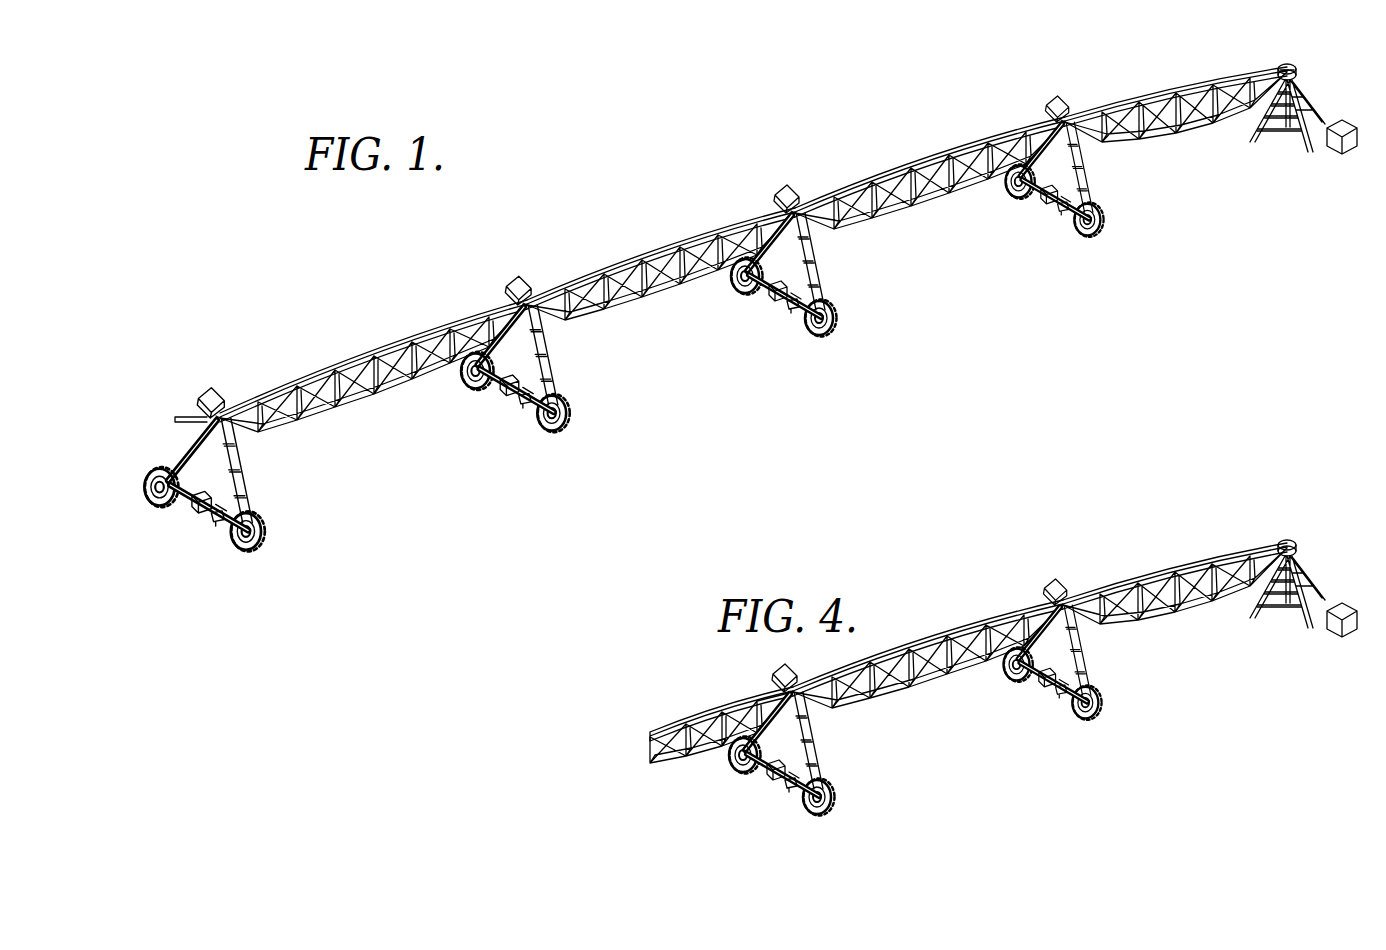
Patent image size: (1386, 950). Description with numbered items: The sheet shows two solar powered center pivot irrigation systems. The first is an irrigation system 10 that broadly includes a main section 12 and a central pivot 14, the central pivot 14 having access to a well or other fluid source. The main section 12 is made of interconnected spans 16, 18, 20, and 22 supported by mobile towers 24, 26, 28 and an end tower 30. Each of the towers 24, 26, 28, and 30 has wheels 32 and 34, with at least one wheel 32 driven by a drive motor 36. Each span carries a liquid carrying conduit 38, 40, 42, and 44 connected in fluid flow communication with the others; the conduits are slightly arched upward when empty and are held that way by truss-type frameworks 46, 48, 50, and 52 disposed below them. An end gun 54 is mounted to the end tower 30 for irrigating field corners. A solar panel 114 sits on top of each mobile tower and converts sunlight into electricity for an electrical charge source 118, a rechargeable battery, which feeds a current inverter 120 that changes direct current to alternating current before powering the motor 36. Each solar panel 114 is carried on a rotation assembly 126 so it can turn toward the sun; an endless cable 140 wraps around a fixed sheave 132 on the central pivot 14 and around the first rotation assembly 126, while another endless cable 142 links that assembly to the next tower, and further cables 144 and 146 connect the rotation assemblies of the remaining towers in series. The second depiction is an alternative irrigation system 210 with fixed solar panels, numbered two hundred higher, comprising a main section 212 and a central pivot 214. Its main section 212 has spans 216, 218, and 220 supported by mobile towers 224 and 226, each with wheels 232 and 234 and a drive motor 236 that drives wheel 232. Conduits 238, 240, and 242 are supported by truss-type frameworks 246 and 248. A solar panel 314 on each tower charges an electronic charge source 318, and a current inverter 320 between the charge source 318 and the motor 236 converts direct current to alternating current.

In FIG. 1, the irrigation system 10 is at (608, 180).
In FIG. 1, the main section 12 is at (357, 272).
In FIG. 1, the central pivot 14 is at (1304, 136).
In FIG. 1, the span 16 is at (1218, 70).
In FIG. 1, the span 18 is at (980, 130).
In FIG. 1, the span 20 is at (735, 195).
In FIG. 1, the span 22 is at (440, 300).
In FIG. 1, the mobile tower 24 is at (1097, 257).
In FIG. 1, the mobile tower 26 is at (812, 347).
In FIG. 1, the mobile tower 28 is at (546, 452).
In FIG. 1, the end tower 30 is at (177, 560).
In FIG. 1, the wheel 32 is at (152, 473).
In FIG. 1, the wheel 34 is at (260, 537).
In FIG. 1, the drive motor 36 is at (209, 514).
In FIG. 1, the liquid carrying conduit 38 is at (1188, 97).
In FIG. 1, the liquid carrying conduit 40 is at (928, 162).
In FIG. 1, the liquid carrying conduit 42 is at (673, 247).
In FIG. 1, the liquid carrying conduit 44 is at (362, 356).
In FIG. 1, the truss-type framework 46 is at (1218, 162).
In FIG. 1, the truss-type framework 48 is at (975, 255).
In FIG. 1, the truss-type framework 50 is at (700, 345).
In FIG. 1, the truss-type framework 52 is at (407, 432).
In FIG. 1, the end gun 54 is at (185, 416).
In FIG. 1, the solar panel 114 is at (205, 398).
In FIG. 1, the electrical charge source 118 is at (183, 495).
In FIG. 1, the current inverter 120 is at (205, 492).
In FIG. 1, the rotation assembly 126 is at (232, 393).
In FIG. 1, the fixed sheave 132 is at (1298, 67).
In FIG. 1, the endless cable 140 is at (1085, 122).
In FIG. 1, the endless cable 142 is at (817, 202).
In FIG. 1, the cable 144 is at (550, 280).
In FIG. 1, the cable 146 is at (275, 386).
In FIG. 4, the irrigation system 210 is at (940, 562).
In FIG. 4, the main section 212 is at (705, 652).
In FIG. 4, the central pivot 214 is at (1322, 565).
In FIG. 4, the span 216 is at (1228, 530).
In FIG. 4, the span 218 is at (1020, 605).
In FIG. 4, the span 220 is at (700, 708).
In FIG. 4, the mobile tower 224 is at (1107, 742).
In FIG. 4, the mobile tower 226 is at (848, 785).
In FIG. 4, the wheel 232 is at (740, 767).
In FIG. 4, the wheel 234 is at (828, 805).
In FIG. 4, the drive motor 236 is at (789, 782).
In FIG. 4, the liquid carrying conduit 238 is at (1140, 587).
In FIG. 4, the liquid carrying conduit 240 is at (925, 657).
In FIG. 4, the liquid carrying conduit 242 is at (650, 733).
In FIG. 4, the truss-type framework 246 is at (1200, 635).
In FIG. 4, the truss-type framework 248 is at (928, 730).
In FIG. 4, the solar panel 314 is at (788, 683).
In FIG. 4, the electronic charge source 318 is at (760, 777).
In FIG. 4, the current inverter 320 is at (790, 764).